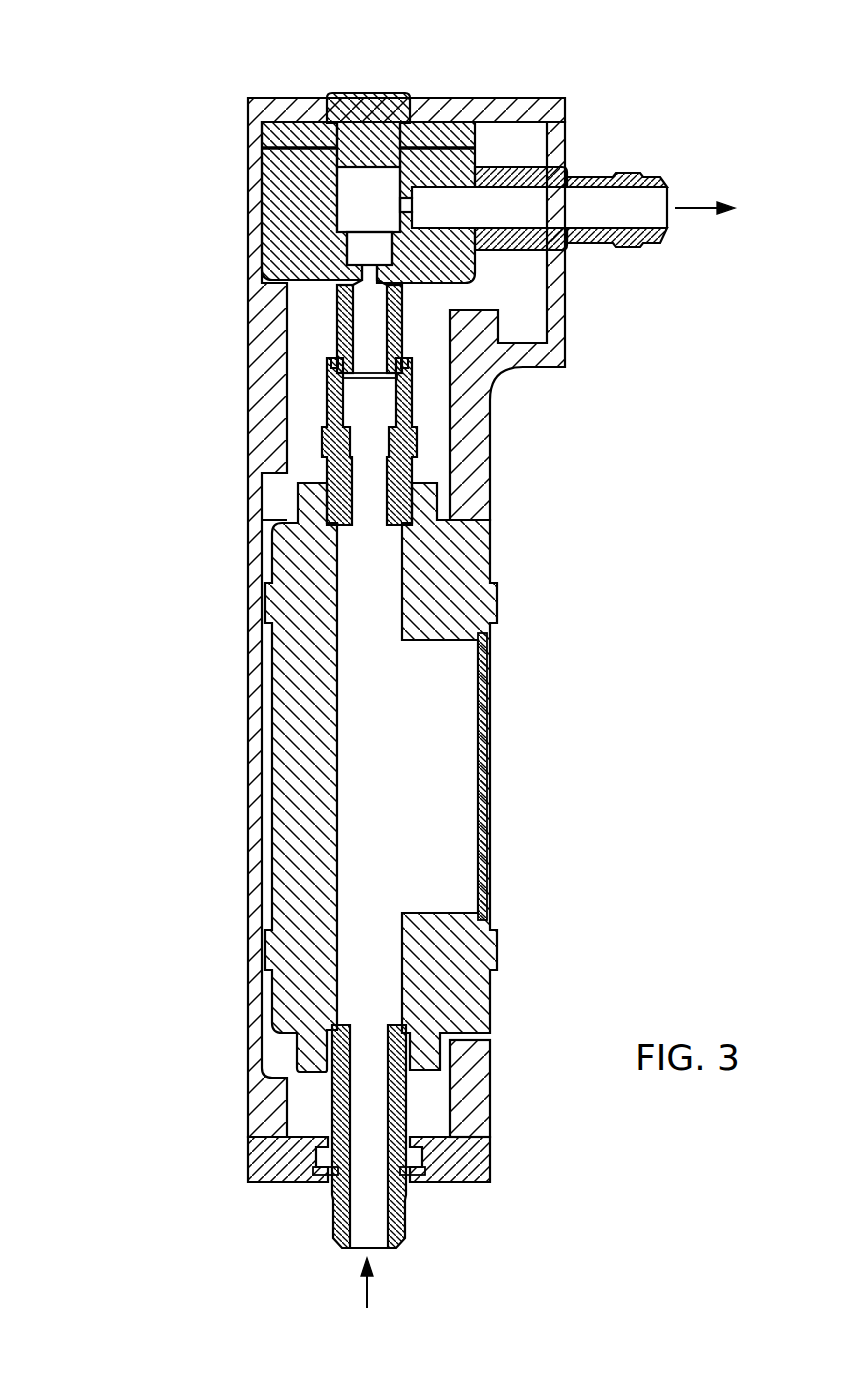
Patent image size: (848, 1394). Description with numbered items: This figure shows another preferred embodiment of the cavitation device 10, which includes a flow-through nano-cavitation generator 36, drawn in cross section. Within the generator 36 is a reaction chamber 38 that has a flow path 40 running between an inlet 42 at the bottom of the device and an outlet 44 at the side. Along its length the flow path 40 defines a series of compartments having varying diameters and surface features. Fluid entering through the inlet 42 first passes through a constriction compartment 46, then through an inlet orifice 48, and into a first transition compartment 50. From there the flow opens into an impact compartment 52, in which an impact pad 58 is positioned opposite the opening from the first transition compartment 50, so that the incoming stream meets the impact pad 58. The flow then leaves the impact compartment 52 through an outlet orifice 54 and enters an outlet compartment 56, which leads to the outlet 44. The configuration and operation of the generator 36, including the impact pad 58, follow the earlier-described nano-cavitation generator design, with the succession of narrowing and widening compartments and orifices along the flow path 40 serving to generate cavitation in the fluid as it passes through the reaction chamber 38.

The cavitation device 10 is at (110, 115).
The nano-cavitation generator 36 is at (248, 424).
The reaction chamber 38 is at (280, 216).
The flow path 40 is at (363, 325).
The inlet 42 is at (353, 1248).
The outlet 44 is at (668, 198).
The constriction compartment 46 is at (372, 345).
The inlet orifice 48 is at (378, 272).
The first transition compartment 50 is at (355, 262).
The impact compartment 52 is at (345, 207).
The outlet orifice 54 is at (412, 198).
The outlet compartment 56 is at (462, 208).
The impact pad 58 is at (372, 135).